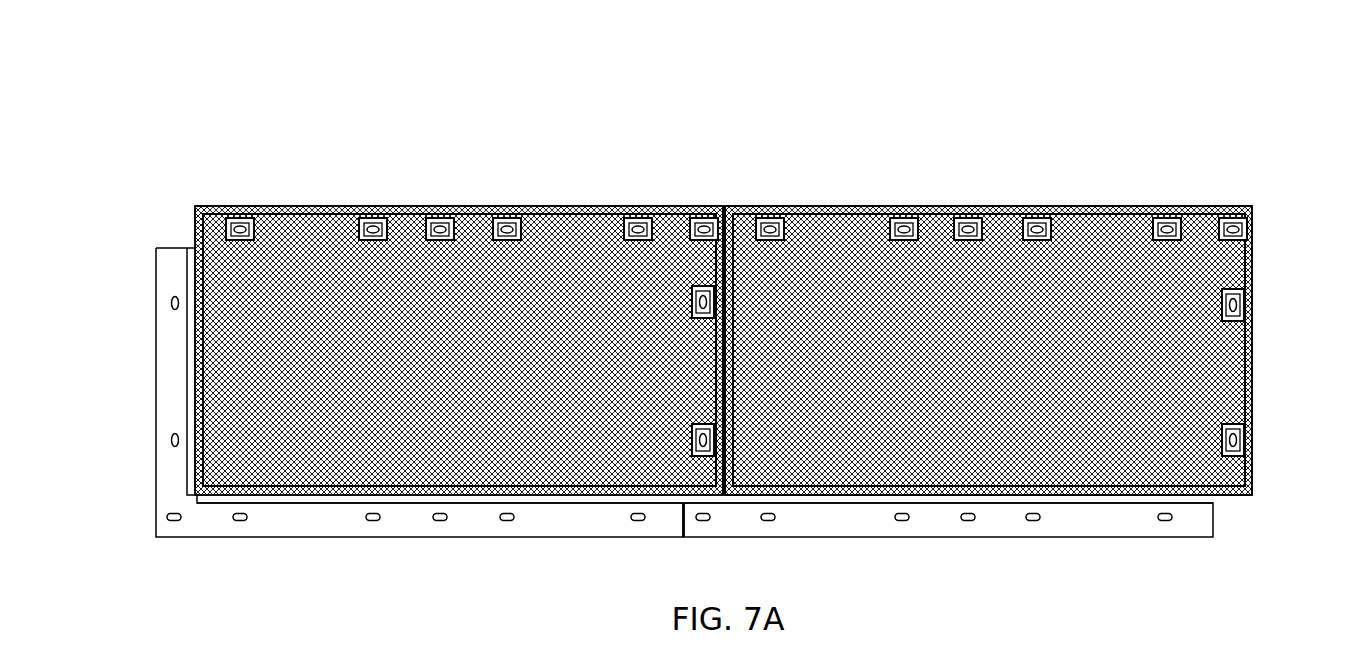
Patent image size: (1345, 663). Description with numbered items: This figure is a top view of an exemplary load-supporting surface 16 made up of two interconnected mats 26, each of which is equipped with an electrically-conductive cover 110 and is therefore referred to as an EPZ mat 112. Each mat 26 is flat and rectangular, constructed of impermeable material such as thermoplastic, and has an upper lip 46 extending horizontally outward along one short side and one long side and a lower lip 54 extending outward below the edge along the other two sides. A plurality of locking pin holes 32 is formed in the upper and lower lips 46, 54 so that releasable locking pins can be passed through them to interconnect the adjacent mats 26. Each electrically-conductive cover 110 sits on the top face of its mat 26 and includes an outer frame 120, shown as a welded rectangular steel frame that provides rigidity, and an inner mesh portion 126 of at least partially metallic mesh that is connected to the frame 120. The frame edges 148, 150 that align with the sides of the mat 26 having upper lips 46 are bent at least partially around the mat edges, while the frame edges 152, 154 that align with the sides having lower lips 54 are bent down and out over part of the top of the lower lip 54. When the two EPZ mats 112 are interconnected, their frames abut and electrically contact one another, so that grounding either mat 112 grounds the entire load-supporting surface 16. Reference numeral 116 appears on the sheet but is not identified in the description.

The load-supporting surface 16 is at (848, 90).
The mat 26 is at (228, 160).
The locking pin holes 32 is at (968, 226).
The upper lip 46 is at (487, 207).
The lower lip 54 is at (155, 480).
The electrically-conductive cover 110 is at (433, 186).
The EPZ mat 112 is at (1023, 168).
The base member 116 is at (272, 660).
The outer frame 120 is at (605, 207).
The inner mesh portion 126 is at (307, 235).
The frame edge 148 is at (730, 246).
The frame edge 150 is at (541, 207).
The frame edge 152 is at (178, 376).
The frame edge 154 is at (580, 516).